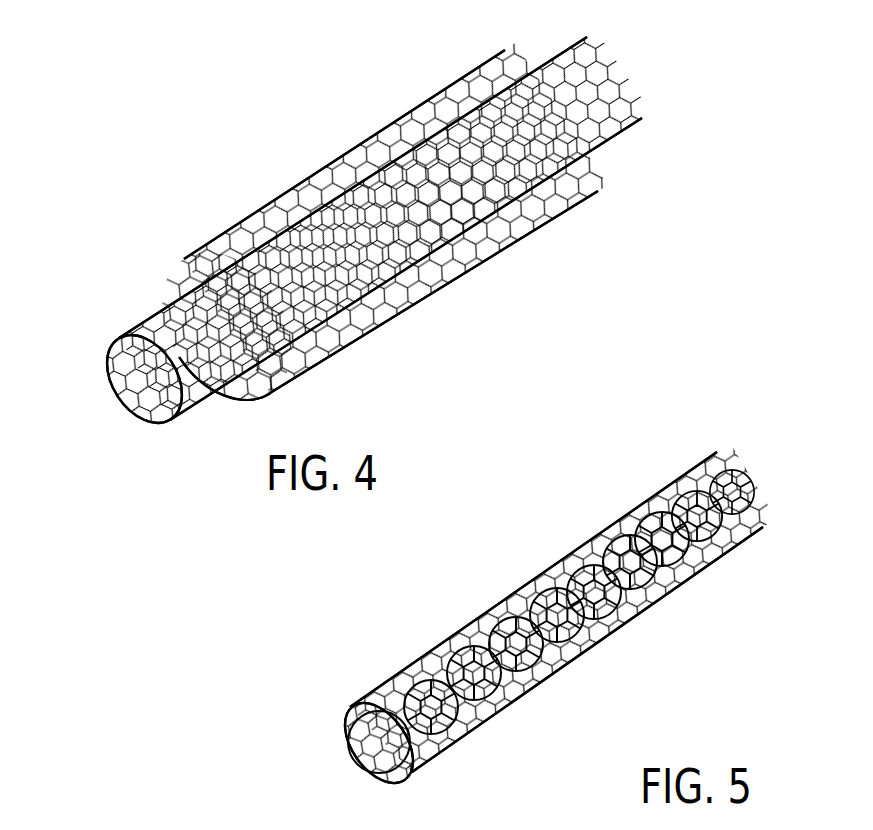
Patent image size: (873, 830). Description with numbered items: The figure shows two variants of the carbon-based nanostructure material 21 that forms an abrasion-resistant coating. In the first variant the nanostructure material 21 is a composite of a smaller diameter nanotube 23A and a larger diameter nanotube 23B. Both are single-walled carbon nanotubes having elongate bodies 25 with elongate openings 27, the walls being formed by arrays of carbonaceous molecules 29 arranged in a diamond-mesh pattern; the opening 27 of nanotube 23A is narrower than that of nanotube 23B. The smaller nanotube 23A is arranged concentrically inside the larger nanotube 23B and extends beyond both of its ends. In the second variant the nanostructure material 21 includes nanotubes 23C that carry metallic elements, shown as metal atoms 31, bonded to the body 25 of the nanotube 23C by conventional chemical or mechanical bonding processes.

In FIG. 4, the nanostructure material 21 is at (335, 242).
In FIG. 5, the nanostructure material 21 is at (553, 605).
In FIG. 4, the smaller diameter nanotube 23A is at (110, 318).
In FIG. 4, the larger diameter nanotube 23B is at (236, 195).
In FIG. 5, the nanotube having metallic elements 23C is at (545, 538).
In FIG. 4, the elongate body 25 is at (194, 416).
In FIG. 5, the elongate body 25 is at (568, 676).
In FIG. 4, the elongate opening 27 is at (135, 401).
In FIG. 5, the elongate opening 27 is at (395, 777).
In FIG. 4, the carbonaceous molecules 29 is at (493, 78).
In FIG. 5, the carbonaceous molecules 29 is at (600, 633).
In FIG. 5, the metal atoms 31 is at (742, 483).